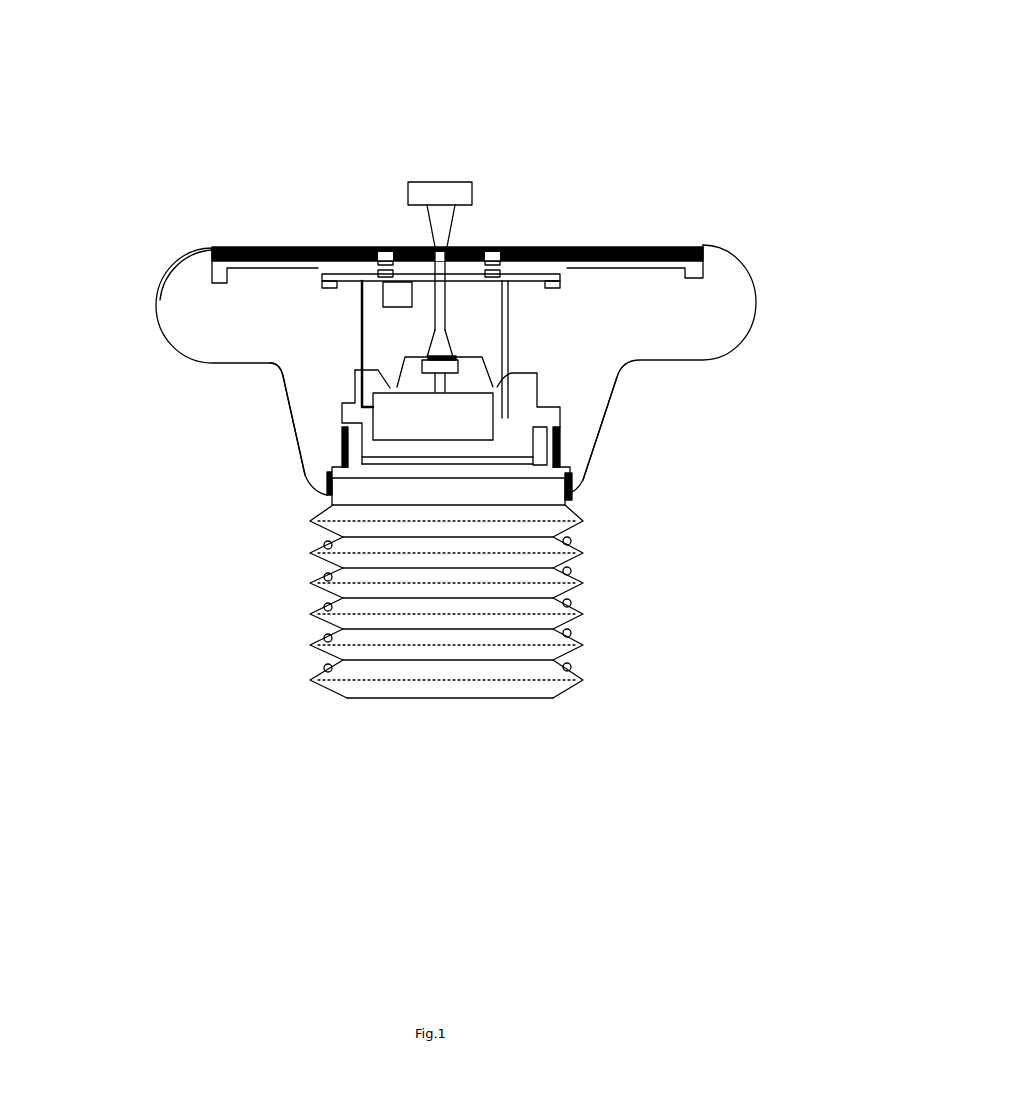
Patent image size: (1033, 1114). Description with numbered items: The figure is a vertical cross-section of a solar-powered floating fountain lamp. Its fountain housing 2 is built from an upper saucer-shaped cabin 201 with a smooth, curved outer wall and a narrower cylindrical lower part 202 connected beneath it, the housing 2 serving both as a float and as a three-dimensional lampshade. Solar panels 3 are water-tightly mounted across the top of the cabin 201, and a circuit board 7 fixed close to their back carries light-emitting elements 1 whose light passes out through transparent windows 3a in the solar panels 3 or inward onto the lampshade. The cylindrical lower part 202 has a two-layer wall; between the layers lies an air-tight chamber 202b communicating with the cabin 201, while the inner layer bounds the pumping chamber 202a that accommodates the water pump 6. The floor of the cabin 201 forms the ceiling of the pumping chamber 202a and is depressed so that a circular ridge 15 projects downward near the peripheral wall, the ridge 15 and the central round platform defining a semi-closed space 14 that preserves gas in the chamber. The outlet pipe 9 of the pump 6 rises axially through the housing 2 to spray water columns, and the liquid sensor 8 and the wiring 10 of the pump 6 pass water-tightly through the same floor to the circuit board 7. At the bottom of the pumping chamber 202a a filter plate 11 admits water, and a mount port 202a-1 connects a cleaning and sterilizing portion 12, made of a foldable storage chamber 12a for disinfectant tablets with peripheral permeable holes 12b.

The light-emitting element 1 is at (494, 282).
The fountain housing 2 is at (208, 365).
The saucer-shaped cabin 201 is at (167, 277).
The cylindrical lower part 202 is at (283, 415).
The pumping chamber 202a is at (342, 427).
The mount port 202a-1 is at (553, 440).
The chamber 202b is at (580, 420).
The solar panel 3 is at (613, 247).
The transparent window 3a is at (380, 247).
The water pump 6 is at (325, 505).
The circuit board 7 is at (537, 278).
The liquid sensor 8 is at (511, 403).
The outlet pipe 9 is at (442, 292).
The wiring 10 is at (388, 387).
The filter plate 11 is at (503, 460).
The cleaning and sterilizing portion 12 is at (386, 692).
The storage chamber 12a is at (512, 650).
The permeable hole 12b is at (318, 643).
The semi-closed space 14 is at (412, 388).
The ridge 15 is at (364, 352).